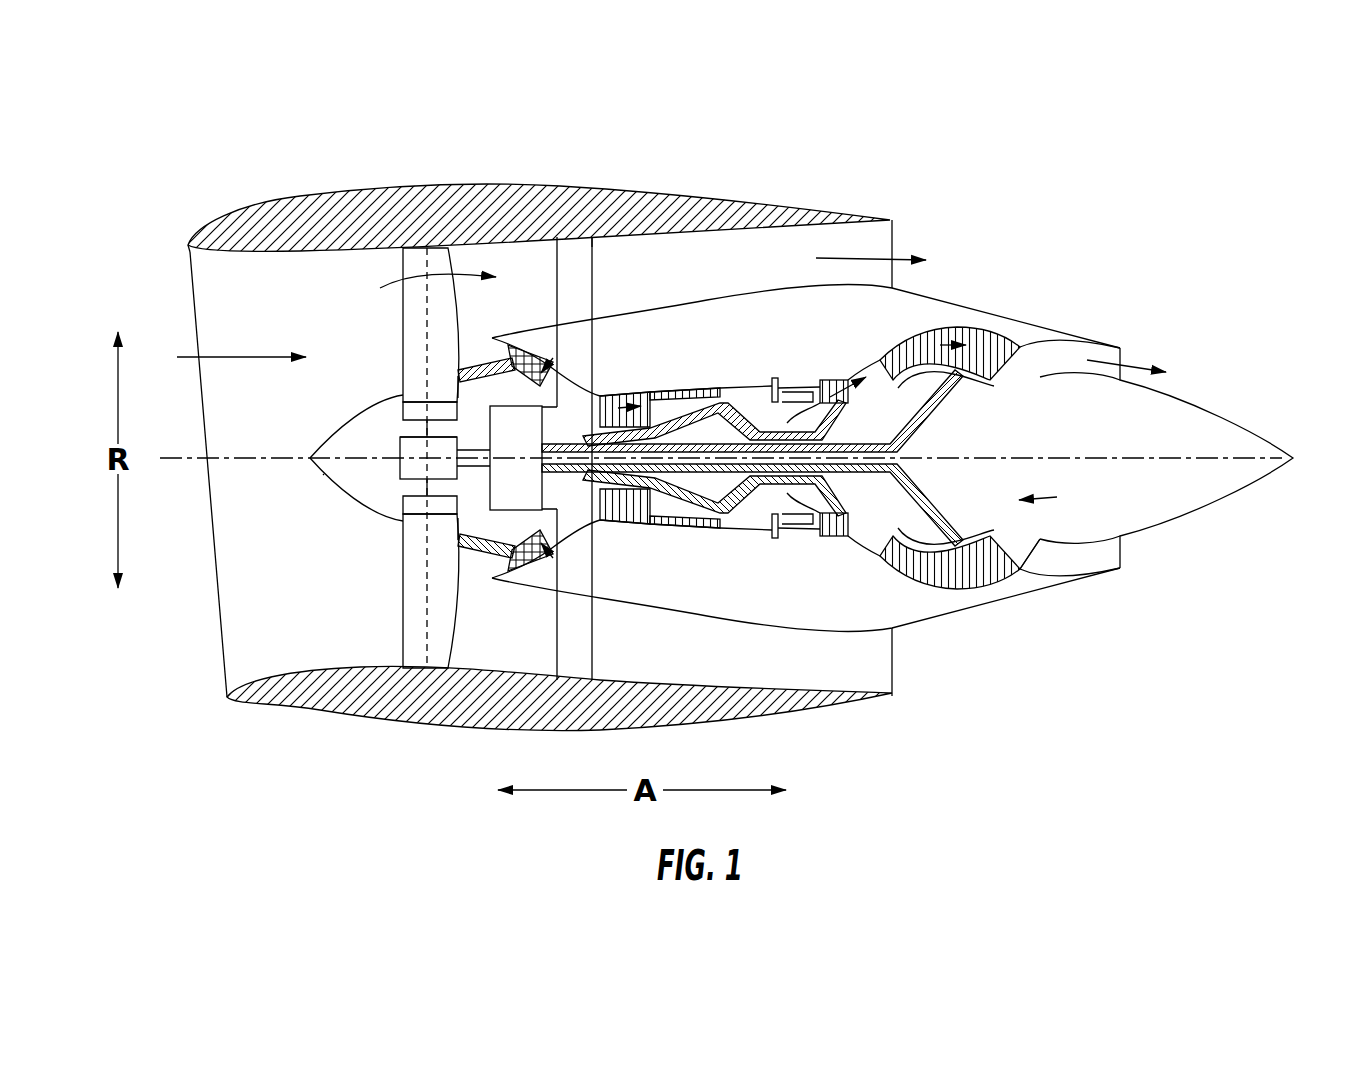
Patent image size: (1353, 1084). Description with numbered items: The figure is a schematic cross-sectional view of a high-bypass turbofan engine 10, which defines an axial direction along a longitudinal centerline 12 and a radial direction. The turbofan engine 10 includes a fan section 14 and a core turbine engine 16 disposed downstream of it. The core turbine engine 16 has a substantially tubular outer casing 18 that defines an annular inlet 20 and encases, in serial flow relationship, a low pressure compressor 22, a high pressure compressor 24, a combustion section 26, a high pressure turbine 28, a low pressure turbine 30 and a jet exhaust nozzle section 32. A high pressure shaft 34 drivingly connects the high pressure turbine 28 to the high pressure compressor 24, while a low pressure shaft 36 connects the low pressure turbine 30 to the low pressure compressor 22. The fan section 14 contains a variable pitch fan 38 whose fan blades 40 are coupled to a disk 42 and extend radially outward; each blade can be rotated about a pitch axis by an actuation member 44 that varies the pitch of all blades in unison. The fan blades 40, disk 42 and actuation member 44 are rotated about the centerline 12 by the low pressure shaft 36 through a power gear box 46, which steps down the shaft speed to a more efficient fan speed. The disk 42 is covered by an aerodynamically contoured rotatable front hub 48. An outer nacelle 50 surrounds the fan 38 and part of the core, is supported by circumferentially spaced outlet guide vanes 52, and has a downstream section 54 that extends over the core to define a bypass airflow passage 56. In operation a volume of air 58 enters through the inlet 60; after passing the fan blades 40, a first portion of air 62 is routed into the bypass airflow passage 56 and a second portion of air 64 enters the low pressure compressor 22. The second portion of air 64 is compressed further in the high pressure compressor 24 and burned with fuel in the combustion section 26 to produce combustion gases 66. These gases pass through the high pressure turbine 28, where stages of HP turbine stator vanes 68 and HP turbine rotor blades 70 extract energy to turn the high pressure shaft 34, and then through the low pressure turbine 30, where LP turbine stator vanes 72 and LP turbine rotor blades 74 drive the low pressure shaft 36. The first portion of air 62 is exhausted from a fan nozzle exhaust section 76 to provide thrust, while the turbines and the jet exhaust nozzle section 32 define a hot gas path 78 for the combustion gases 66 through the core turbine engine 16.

The turbofan engine 10 is at (1037, 200).
The longitudinal centerline 12 is at (1058, 457).
The fan section 14 is at (358, 276).
The core turbine engine 16 is at (712, 344).
The outer casing 18 is at (751, 621).
The annular inlet 20 is at (500, 562).
The low pressure compressor 22 is at (558, 532).
The high pressure compressor 24 is at (620, 512).
The combustion section 26 is at (793, 522).
The high pressure turbine 28 is at (930, 521).
The low pressure turbine 30 is at (977, 588).
The jet exhaust nozzle section 32 is at (1038, 566).
The high pressure shaft 34 is at (794, 426).
The low pressure shaft 36 is at (930, 412).
The variable pitch fan 38 is at (366, 508).
The fan blades 40 is at (398, 607).
The disk 42 is at (418, 408).
The actuation member 44 is at (400, 437).
The power gear box 46 is at (527, 422).
The front hub 48 is at (324, 475).
The outer nacelle 50 is at (448, 731).
The outlet guide vanes 52 is at (594, 267).
The downstream section of the nacelle 54 is at (838, 212).
The bypass airflow passage 56 is at (740, 279).
The volume of air 58 is at (242, 357).
The inlet 60 is at (224, 671).
The first portion of air 62 is at (417, 284).
The second portion of air 64 is at (477, 352).
The combustion gases 66 is at (938, 336).
The HP turbine stator vanes 68 is at (808, 518).
The HP turbine rotor blades 70 is at (820, 513).
The LP turbine stator vanes 72 is at (904, 567).
The LP turbine rotor blades 74 is at (910, 580).
The fan nozzle exhaust section 76 is at (884, 245).
The hot gas path 78 is at (873, 360).